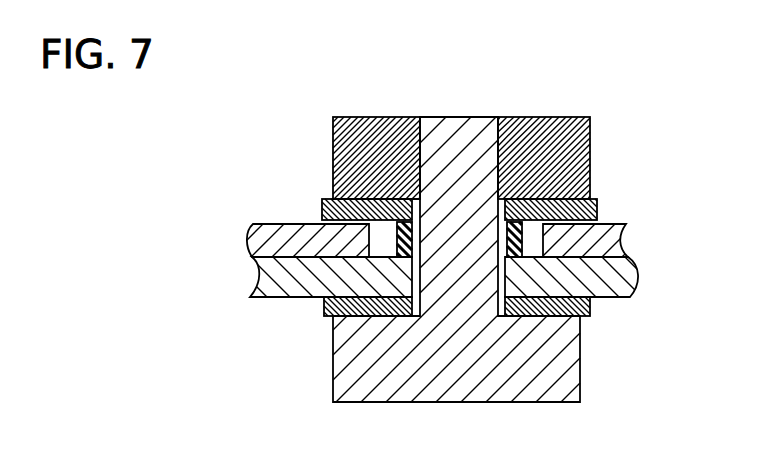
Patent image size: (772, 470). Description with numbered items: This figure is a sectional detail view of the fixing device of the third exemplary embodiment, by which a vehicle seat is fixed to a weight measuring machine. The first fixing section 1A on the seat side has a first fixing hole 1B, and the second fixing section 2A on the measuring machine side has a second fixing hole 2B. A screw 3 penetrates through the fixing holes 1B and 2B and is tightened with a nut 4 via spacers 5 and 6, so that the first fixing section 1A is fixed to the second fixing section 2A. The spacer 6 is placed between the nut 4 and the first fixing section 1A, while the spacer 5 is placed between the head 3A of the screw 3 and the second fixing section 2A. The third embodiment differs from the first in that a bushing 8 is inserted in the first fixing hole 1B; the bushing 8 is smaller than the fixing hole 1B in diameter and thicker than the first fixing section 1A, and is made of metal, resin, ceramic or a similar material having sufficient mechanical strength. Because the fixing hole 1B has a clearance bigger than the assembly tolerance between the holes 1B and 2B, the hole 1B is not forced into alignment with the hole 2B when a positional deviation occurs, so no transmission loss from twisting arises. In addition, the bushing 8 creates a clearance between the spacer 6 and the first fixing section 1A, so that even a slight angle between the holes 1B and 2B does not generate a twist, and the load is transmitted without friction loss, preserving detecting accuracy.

The first fixing section 1A is at (298, 237).
The first fixing hole 1B is at (527, 242).
The second fixing section 2A is at (302, 272).
The second fixing hole 2B is at (502, 272).
The screw 3 is at (474, 278).
The head of screw 3A is at (565, 352).
The nut 4 is at (565, 162).
The spacer 5 is at (583, 313).
The spacer 6 is at (597, 202).
The bushing 8 is at (362, 207).